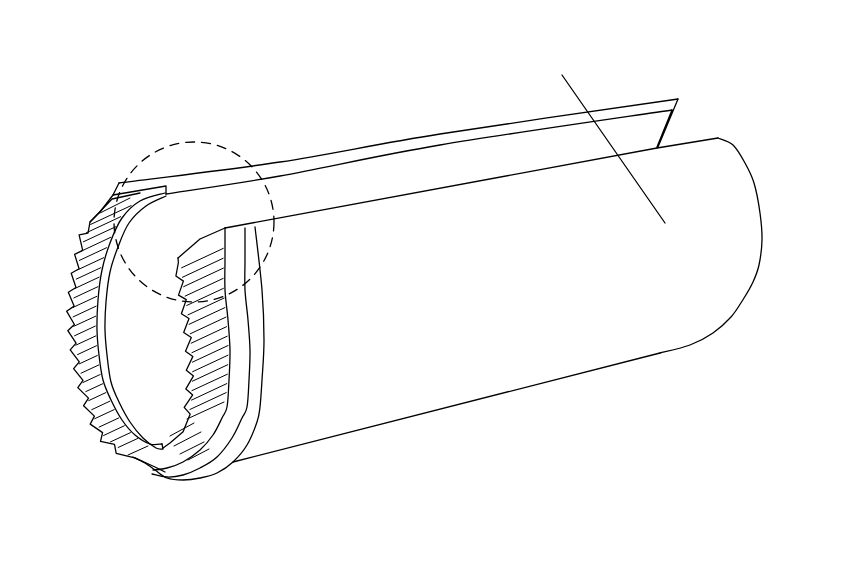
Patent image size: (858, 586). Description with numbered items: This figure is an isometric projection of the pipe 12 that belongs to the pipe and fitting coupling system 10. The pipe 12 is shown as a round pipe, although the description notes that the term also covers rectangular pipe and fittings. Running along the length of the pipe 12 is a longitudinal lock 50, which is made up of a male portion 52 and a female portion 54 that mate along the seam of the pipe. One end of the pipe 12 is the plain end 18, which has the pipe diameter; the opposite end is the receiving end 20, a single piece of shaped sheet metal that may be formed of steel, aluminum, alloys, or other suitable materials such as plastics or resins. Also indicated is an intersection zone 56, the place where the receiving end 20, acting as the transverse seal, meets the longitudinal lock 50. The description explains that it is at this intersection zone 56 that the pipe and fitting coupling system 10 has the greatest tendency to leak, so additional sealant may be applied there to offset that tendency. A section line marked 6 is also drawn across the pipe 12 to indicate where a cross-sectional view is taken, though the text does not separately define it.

The pipe and fitting coupling system 10 is at (523, 66).
The first pipe 12 is at (251, 104).
The section line 6- 6 is at (580, 87).
The plain end 18 is at (748, 283).
The receiving end 20 is at (191, 487).
The longitudinal lock 50 is at (405, 183).
The male portion 52 is at (458, 130).
The female portion 54 is at (543, 170).
The intersection zone 56 is at (184, 142).